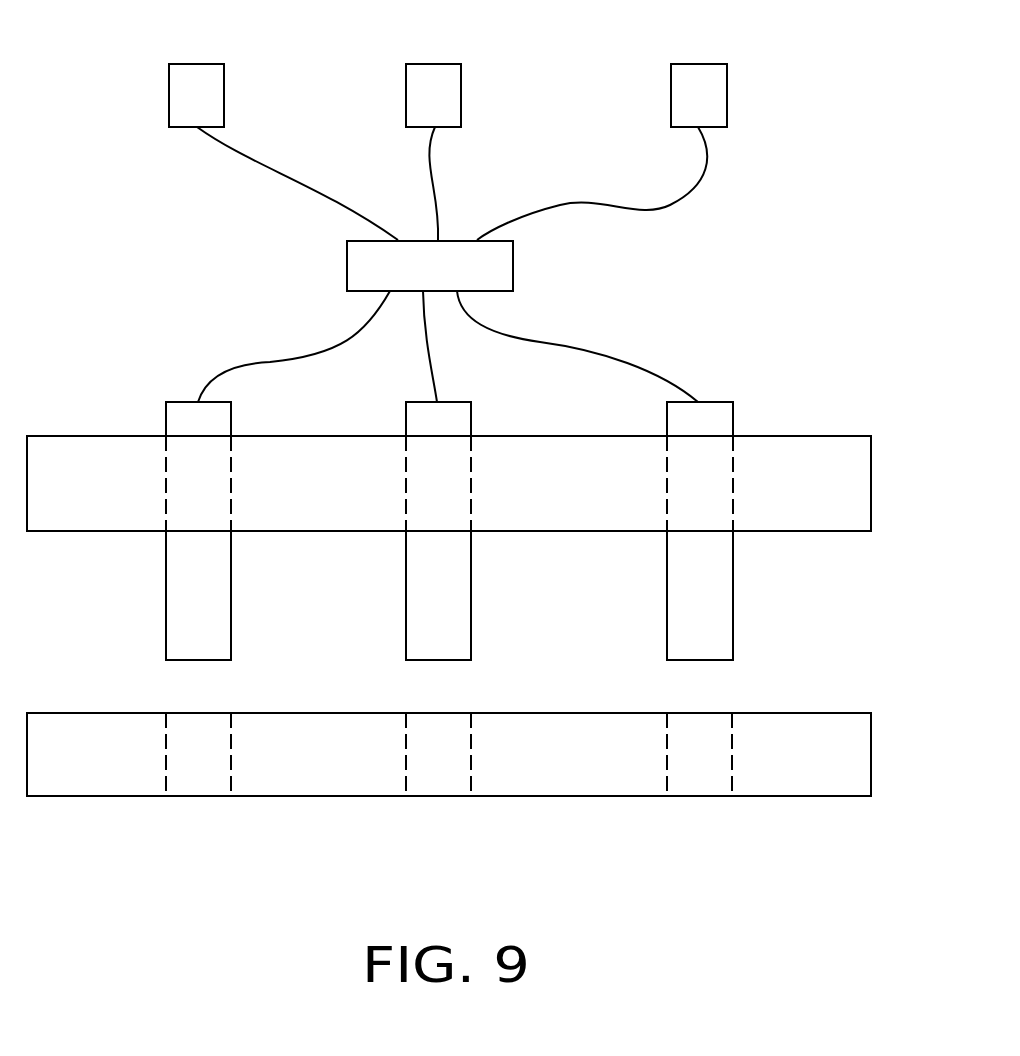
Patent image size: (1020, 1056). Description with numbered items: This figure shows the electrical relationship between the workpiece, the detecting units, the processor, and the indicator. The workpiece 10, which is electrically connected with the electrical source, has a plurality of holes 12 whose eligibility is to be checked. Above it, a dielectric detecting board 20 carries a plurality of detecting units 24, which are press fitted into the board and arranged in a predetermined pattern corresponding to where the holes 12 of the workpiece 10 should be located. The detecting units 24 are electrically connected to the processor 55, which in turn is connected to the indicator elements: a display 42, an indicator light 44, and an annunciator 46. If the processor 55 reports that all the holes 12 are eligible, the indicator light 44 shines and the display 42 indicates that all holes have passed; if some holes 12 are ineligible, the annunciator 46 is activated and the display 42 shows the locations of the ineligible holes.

The workpiece 10 is at (853, 753).
The holes 12 is at (697, 771).
The detecting board 20 is at (848, 482).
The detecting units 24 is at (715, 576).
The display 42 is at (210, 95).
The indicator light 44 is at (448, 92).
The annunciator 46 is at (712, 92).
The processor 55 is at (353, 267).